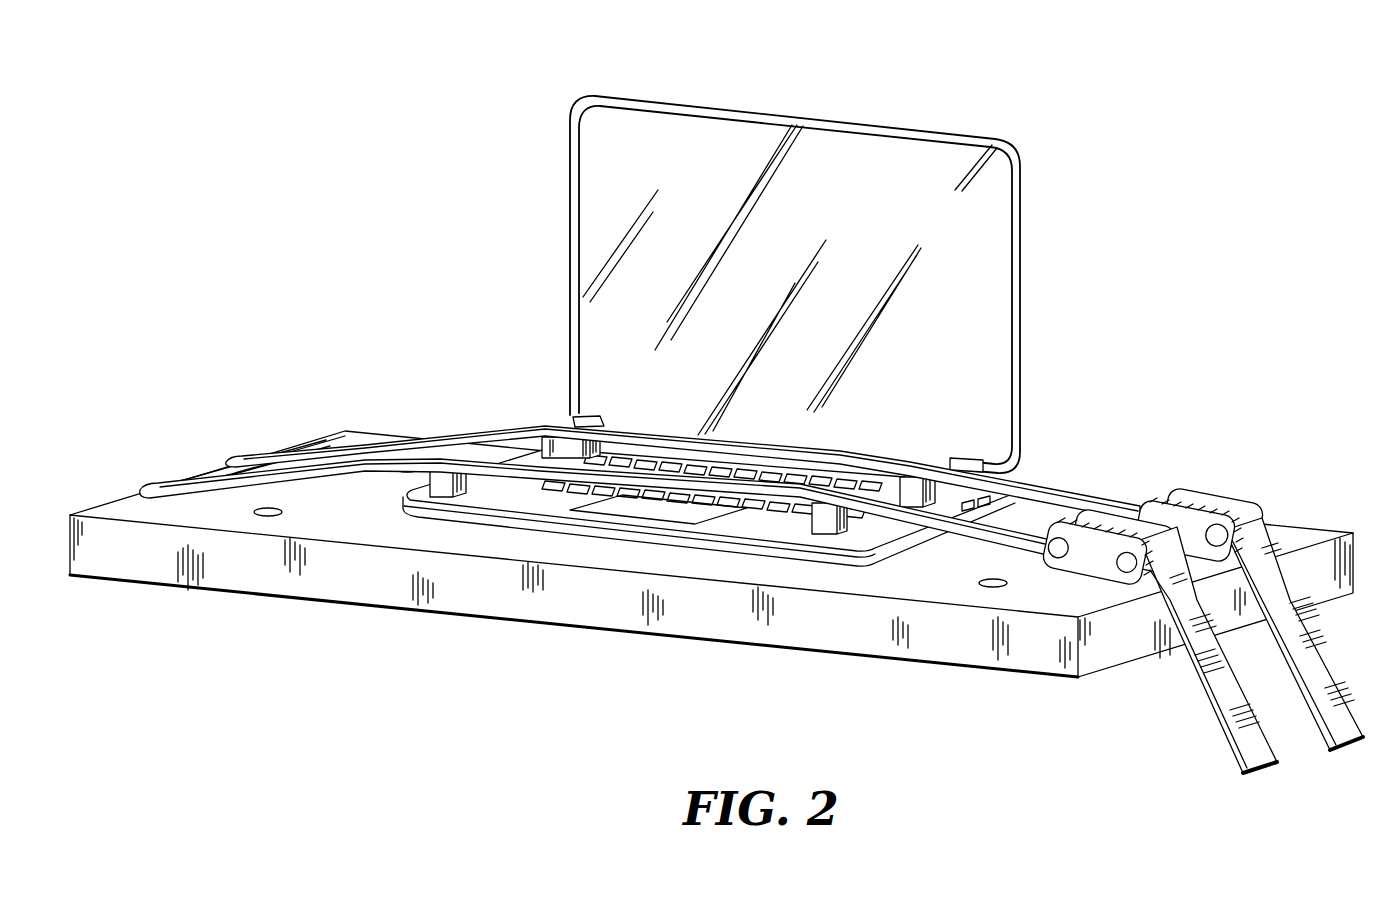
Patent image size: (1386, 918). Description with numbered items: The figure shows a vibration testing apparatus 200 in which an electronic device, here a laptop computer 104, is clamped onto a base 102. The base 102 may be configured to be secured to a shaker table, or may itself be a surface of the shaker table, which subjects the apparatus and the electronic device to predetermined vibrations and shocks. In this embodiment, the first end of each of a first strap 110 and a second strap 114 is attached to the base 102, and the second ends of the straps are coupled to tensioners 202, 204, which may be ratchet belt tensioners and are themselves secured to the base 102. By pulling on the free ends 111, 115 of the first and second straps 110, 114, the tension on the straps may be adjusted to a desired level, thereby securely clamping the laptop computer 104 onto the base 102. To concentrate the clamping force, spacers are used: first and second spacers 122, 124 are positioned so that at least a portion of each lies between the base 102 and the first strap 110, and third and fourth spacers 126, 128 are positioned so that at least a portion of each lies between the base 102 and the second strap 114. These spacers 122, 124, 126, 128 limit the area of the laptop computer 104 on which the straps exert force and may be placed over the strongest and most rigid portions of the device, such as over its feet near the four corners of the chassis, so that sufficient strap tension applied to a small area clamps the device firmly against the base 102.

The base 102 is at (515, 622).
The laptop computer 104 is at (913, 122).
The first strap 110 is at (977, 527).
The free end of the first strap 111 is at (1237, 763).
The second strap 114 is at (1067, 503).
The free end of the second strap 115 is at (1330, 738).
The first spacer 122 is at (440, 480).
The second spacer 124 is at (817, 517).
The third spacer 126 is at (537, 448).
The fourth spacer 128 is at (962, 462).
The vibration testing apparatus 200 is at (395, 360).
The tensioner 202 is at (1123, 541).
The tensioner 204 is at (1212, 519).